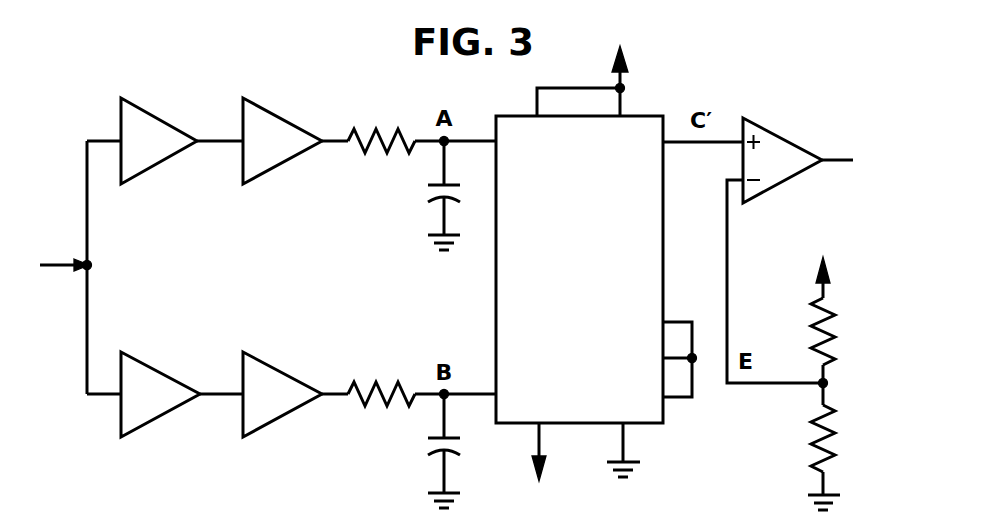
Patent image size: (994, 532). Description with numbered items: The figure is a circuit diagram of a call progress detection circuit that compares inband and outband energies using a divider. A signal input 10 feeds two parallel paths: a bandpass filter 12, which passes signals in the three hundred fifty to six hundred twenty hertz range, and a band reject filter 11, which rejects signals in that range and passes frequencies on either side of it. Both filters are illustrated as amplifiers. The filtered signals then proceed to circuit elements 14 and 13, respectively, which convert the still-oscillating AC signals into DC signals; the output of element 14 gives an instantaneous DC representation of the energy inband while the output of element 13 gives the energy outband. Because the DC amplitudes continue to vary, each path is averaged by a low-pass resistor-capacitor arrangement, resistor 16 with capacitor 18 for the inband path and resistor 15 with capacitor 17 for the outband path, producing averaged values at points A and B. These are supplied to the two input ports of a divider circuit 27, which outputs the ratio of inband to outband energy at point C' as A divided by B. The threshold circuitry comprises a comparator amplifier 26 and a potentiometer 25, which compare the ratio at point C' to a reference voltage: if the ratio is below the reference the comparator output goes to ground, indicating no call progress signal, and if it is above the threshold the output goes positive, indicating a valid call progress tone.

The signal input 10 is at (92, 268).
The band reject filter 11 is at (152, 410).
The bandpass filter 12 is at (150, 160).
The AC-to-DC converter 13 is at (270, 410).
The AC-to-DC converter 14 is at (270, 160).
The resistor 15 is at (390, 407).
The resistor 16 is at (390, 155).
The capacitor 17 is at (437, 454).
The capacitor 18 is at (437, 199).
The potentiometer 25 is at (828, 386).
The comparator amplifier 26 is at (775, 178).
The divider circuit 27 is at (507, 285).